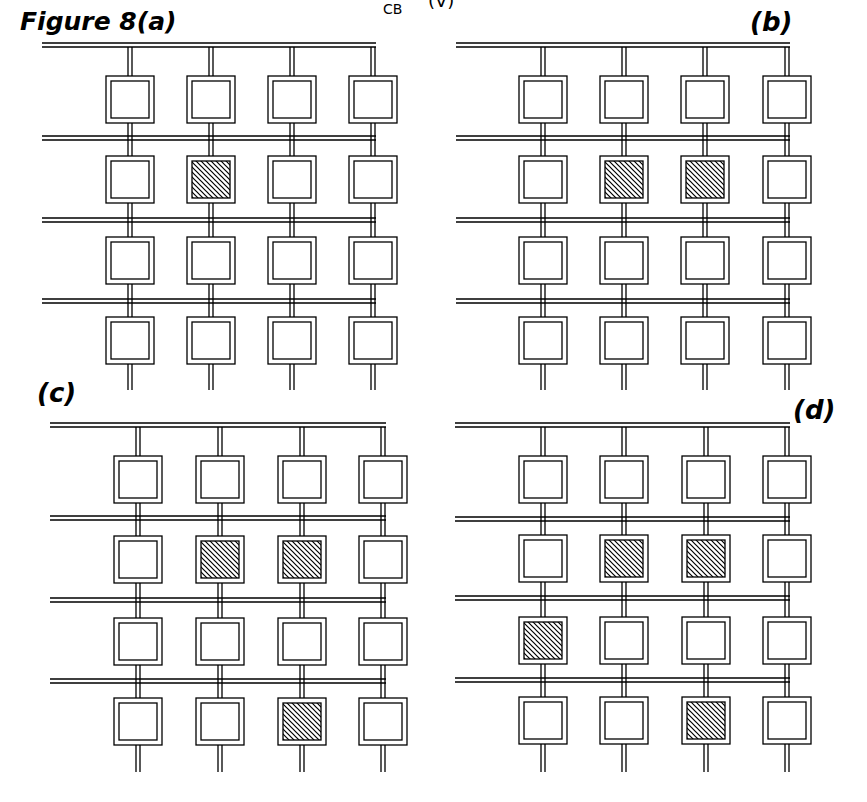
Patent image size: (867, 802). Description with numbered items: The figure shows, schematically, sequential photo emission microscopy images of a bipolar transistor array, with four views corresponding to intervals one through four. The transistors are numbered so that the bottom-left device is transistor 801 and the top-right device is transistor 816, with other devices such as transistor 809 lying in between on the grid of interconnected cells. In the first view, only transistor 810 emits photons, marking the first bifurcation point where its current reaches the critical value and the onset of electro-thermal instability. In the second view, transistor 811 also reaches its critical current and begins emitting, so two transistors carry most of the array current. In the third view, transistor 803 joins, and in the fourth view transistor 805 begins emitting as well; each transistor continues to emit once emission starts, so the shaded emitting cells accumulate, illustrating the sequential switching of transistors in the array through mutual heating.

The transistor 801 is at (125, 340).
The transistor 803 is at (287, 732).
The transistor 805 is at (533, 631).
The transistor 809 is at (125, 181).
The transistor 810 is at (190, 167).
The transistor 811 is at (687, 160).
The transistor 816 is at (378, 95).